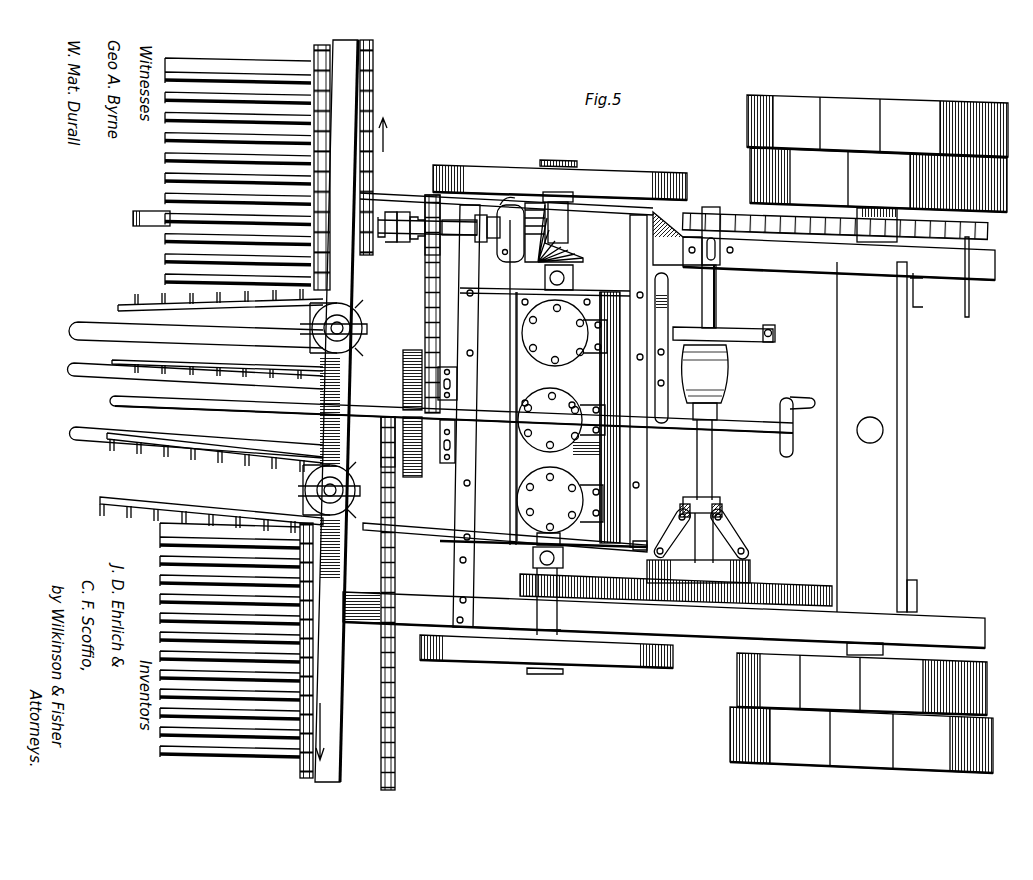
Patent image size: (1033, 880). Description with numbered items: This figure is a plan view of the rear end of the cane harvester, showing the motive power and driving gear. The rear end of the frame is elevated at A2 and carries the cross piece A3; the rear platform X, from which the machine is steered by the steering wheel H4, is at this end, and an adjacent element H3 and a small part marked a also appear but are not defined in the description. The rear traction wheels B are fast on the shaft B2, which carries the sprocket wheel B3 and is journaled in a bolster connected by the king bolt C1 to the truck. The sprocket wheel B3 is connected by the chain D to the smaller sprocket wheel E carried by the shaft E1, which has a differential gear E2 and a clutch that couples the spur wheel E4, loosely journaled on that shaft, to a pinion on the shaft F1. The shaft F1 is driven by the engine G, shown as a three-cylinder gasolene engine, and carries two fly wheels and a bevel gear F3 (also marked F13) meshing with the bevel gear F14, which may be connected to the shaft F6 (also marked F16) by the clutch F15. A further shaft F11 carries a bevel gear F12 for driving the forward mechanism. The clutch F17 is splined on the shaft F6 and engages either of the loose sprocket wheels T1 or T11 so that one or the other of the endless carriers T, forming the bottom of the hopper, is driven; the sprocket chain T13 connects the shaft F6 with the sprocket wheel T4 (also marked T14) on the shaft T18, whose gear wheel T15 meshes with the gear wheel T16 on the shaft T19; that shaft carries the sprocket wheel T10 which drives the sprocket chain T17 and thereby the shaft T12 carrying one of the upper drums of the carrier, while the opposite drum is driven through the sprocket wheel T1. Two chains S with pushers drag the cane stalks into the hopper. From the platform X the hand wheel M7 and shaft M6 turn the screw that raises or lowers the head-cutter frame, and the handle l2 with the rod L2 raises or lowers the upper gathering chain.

The endless carrier T is at (262, 63).
The sprocket wheel T1 is at (385, 240).
The sprocket wheel T11 is at (418, 240).
The shaft T12 is at (372, 108).
The sprocket chain T13 is at (423, 289).
The sprocket wheel T14 is at (393, 393).
The gear wheel T15 is at (403, 350).
The gear wheel T16 is at (420, 465).
The sprocket chain T17 is at (396, 582).
The shaft T18 is at (90, 375).
The shaft T19 is at (95, 445).
The sprocket wheel T10 is at (384, 453).
The sprocket wheel T4 is at (447, 387).
The shaft F1 is at (530, 572).
The shaft F11 is at (570, 222).
The bevel gear F12 is at (627, 172).
The bevel gear F13 is at (575, 270).
The bevel gear F14 is at (531, 203).
The clutch F15 is at (503, 205).
The shaft F16 is at (457, 243).
The clutch F17 is at (402, 211).
The bevel gear F3 is at (717, 547).
The shaft F6 is at (147, 211).
The sprocket wheel E is at (707, 207).
The shaft E1 is at (716, 293).
The differential gear E2 is at (731, 374).
The spur wheel E4 is at (767, 587).
The wheel H3 is at (262, 337).
The steering wheel H4 is at (670, 337).
The rear platform X is at (810, 338).
The shaft M6 is at (730, 420).
The hand wheel M7 is at (787, 400).
The rod L2 is at (600, 550).
The handle l2 is at (650, 543).
The chain S is at (207, 362).
The engine G is at (562, 418).
The rear traction wheel B is at (917, 113).
The shaft B2 is at (887, 243).
The sprocket wheel B3 is at (976, 277).
The chain D is at (840, 234).
The elevated rear end of frame A2 is at (813, 262).
The cross piece A3 is at (883, 503).
The bracket a is at (922, 300).
The king bolt C1 is at (870, 430).